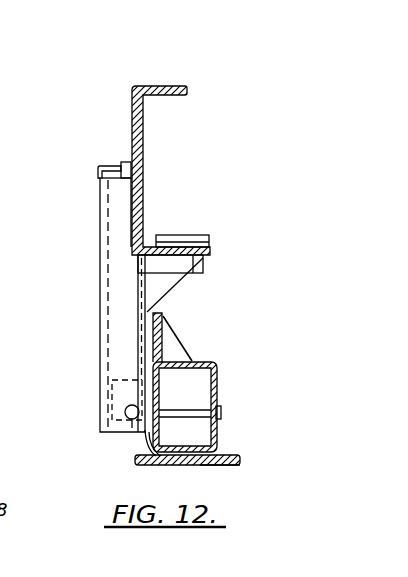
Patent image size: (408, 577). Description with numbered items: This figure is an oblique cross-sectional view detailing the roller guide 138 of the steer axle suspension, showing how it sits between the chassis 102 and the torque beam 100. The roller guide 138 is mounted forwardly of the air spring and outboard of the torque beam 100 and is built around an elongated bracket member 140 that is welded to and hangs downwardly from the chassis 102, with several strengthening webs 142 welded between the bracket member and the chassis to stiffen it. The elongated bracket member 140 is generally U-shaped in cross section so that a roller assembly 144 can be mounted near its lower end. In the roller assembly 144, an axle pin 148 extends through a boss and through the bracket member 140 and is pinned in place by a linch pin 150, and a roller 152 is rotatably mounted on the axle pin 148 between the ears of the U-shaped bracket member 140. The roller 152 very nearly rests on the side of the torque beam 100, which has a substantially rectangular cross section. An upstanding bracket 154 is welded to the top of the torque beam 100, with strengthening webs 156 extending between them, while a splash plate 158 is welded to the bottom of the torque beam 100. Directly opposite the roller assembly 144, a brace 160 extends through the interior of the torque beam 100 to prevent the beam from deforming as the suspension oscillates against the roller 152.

The torque beam 100 is at (218, 389).
The chassis 102 is at (152, 85).
The roller guide 138 is at (100, 263).
The elongated bracket member 140 is at (98, 188).
The strengthening webs 142 is at (176, 280).
The roller assembly 144 is at (143, 434).
The axle pin 148 is at (125, 412).
The linch pin 150 is at (142, 404).
The roller 152 is at (146, 467).
The upstanding bracket 154 is at (163, 314).
The strengthening webs 156 is at (190, 357).
The splash plate 158 is at (203, 469).
The brace 160 is at (200, 416).